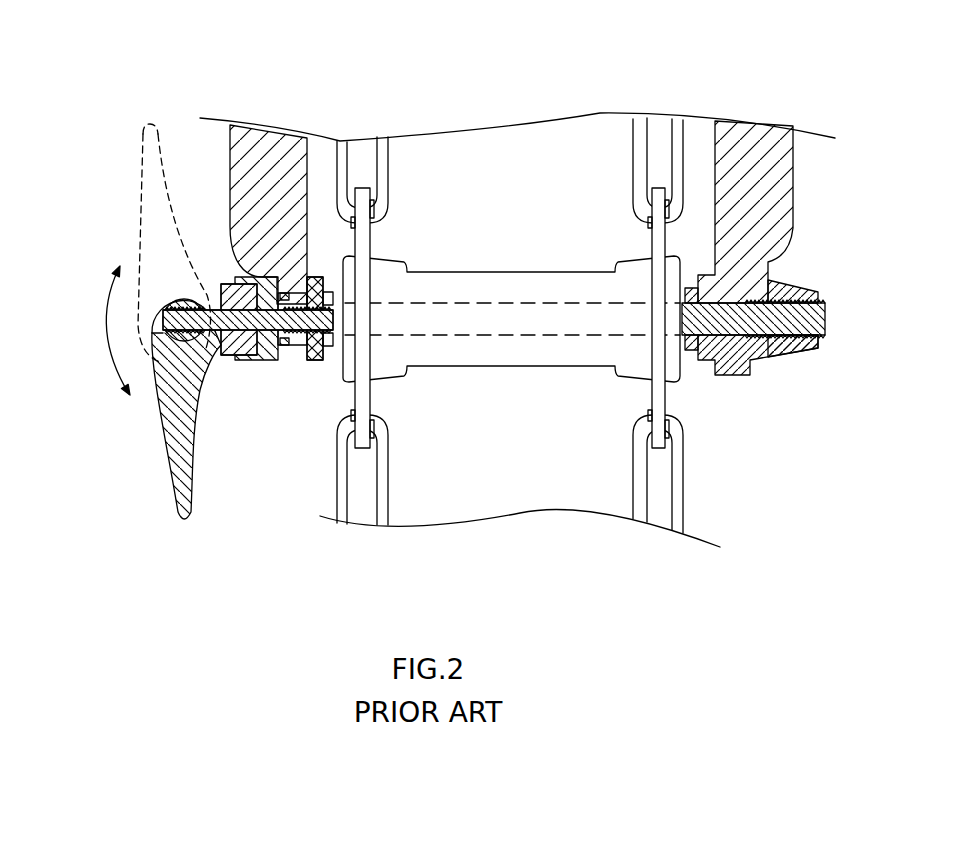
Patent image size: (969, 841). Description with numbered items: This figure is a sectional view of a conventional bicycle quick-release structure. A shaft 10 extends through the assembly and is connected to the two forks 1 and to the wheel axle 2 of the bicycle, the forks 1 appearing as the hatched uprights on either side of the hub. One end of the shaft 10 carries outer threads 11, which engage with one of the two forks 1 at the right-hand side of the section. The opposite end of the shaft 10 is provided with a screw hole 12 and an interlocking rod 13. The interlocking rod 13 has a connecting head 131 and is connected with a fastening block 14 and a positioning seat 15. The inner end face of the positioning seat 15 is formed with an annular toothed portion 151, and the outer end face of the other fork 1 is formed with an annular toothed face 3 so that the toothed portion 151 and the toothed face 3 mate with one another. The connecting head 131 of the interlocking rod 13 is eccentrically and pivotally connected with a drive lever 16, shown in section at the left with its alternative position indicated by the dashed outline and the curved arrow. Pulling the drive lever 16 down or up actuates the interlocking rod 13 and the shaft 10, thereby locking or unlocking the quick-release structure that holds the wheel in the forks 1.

The fork 1 is at (268, 183).
The wheel axle 2 is at (297, 277).
The annular toothed face 3 is at (297, 393).
The annular toothed portion 151 is at (623, 386).
The shaft 10 is at (727, 323).
The outer threads 11 is at (796, 340).
The screw hole 12 is at (258, 275).
The interlocking rod 13 is at (227, 278).
The connecting head 131 is at (163, 287).
The fastening block 14 is at (232, 358).
The positioning seat 15 is at (267, 361).
The drive lever 16 is at (173, 413).